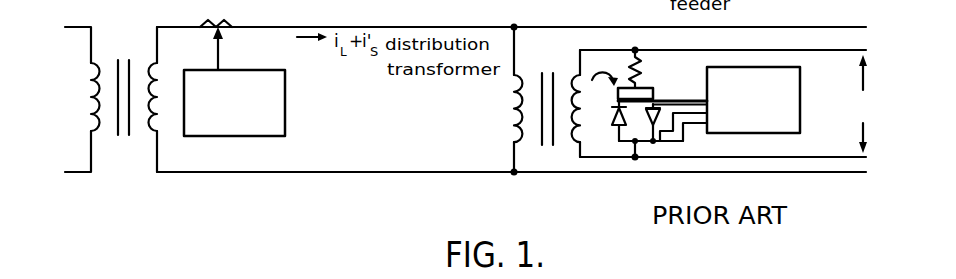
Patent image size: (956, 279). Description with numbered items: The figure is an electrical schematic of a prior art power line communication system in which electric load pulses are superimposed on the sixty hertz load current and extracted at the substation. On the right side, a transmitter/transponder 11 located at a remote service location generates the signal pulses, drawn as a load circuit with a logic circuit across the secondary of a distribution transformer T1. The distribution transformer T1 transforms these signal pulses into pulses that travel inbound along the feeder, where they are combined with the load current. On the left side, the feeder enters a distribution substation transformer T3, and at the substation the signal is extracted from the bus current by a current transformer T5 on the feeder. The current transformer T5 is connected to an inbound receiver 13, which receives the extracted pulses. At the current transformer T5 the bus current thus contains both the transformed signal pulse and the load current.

The distribution substation transformer T3 is at (84, 122).
The current transformer T5 is at (231, 31).
The inbound receiver 13 is at (285, 96).
The distribution transformer T1 is at (506, 119).
The transmitter/transponder 11 is at (706, 76).